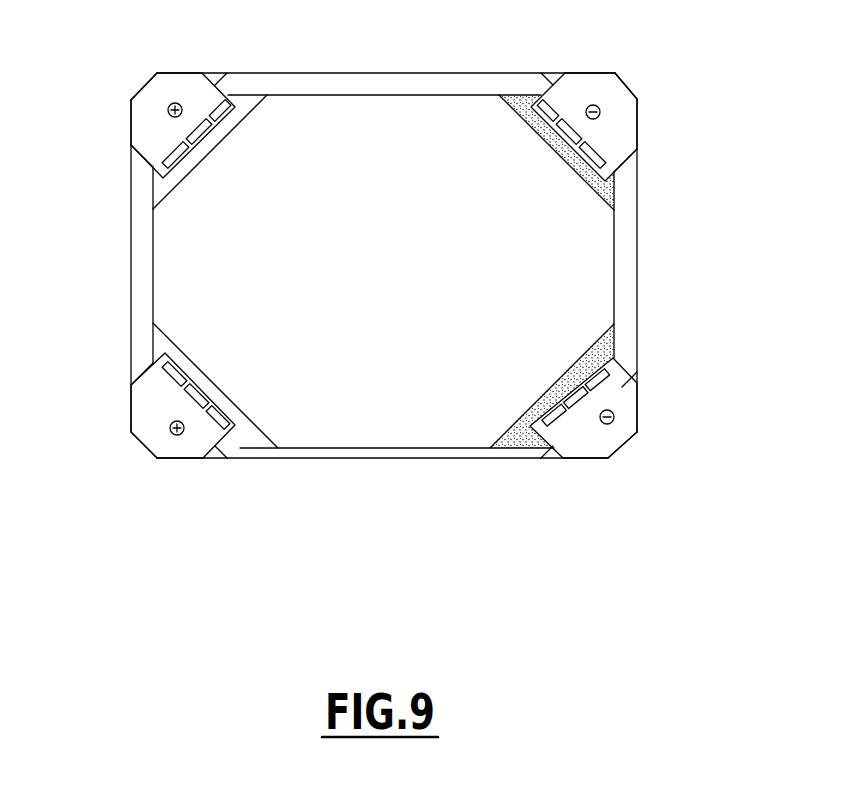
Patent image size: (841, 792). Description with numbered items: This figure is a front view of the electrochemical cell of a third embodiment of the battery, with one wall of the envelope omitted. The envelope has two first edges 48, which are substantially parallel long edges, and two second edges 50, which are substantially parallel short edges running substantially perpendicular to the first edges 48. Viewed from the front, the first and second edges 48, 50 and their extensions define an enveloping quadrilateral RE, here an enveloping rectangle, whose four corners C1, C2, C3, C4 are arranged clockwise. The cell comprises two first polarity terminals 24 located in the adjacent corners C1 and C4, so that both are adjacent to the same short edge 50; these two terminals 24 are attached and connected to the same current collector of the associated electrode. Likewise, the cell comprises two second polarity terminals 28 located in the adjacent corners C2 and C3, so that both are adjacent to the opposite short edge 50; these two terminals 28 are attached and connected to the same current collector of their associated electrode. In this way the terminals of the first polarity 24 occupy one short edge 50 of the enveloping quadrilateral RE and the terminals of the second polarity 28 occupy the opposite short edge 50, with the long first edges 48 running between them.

The first terminal of the first polarity 24 is at (150, 123).
The second terminal of the second polarity 28 is at (612, 137).
The first edge 48 is at (403, 73).
The second edge 50 is at (128, 276).
The first corner C1 is at (131, 73).
The second corner C2 is at (637, 73).
The third corner C3 is at (638, 459).
The fourth corner C4 is at (131, 458).
The enveloping quadrilateral RE is at (131, 458).